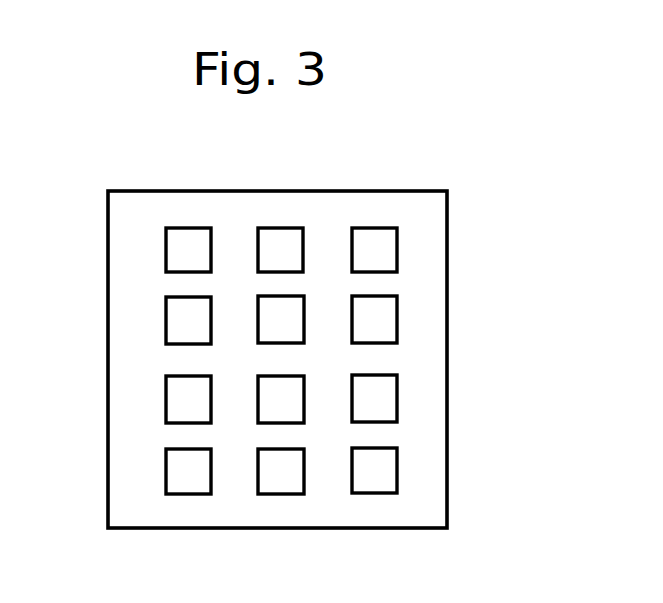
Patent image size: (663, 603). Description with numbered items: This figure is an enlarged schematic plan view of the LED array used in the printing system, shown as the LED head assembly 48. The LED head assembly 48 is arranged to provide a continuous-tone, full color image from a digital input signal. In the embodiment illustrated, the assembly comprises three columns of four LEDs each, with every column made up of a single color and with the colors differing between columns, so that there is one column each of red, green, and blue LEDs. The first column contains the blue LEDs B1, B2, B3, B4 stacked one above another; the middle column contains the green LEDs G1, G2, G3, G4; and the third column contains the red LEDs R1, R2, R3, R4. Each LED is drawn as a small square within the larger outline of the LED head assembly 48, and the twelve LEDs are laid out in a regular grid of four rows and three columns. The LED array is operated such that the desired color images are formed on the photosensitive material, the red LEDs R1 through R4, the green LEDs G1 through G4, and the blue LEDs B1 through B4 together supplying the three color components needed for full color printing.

The LED head assembly 48 is at (448, 229).
The blue LED B1 is at (172, 240).
The blue LED B2 is at (166, 322).
The blue LED B3 is at (166, 400).
The blue LED B4 is at (183, 482).
The green LED G1 is at (268, 240).
The green LED G2 is at (298, 322).
The green LED G3 is at (300, 408).
The green LED G4 is at (280, 478).
The red LED R1 is at (370, 237).
The red LED R2 is at (383, 317).
The red LED R3 is at (397, 390).
The red LED R4 is at (385, 470).